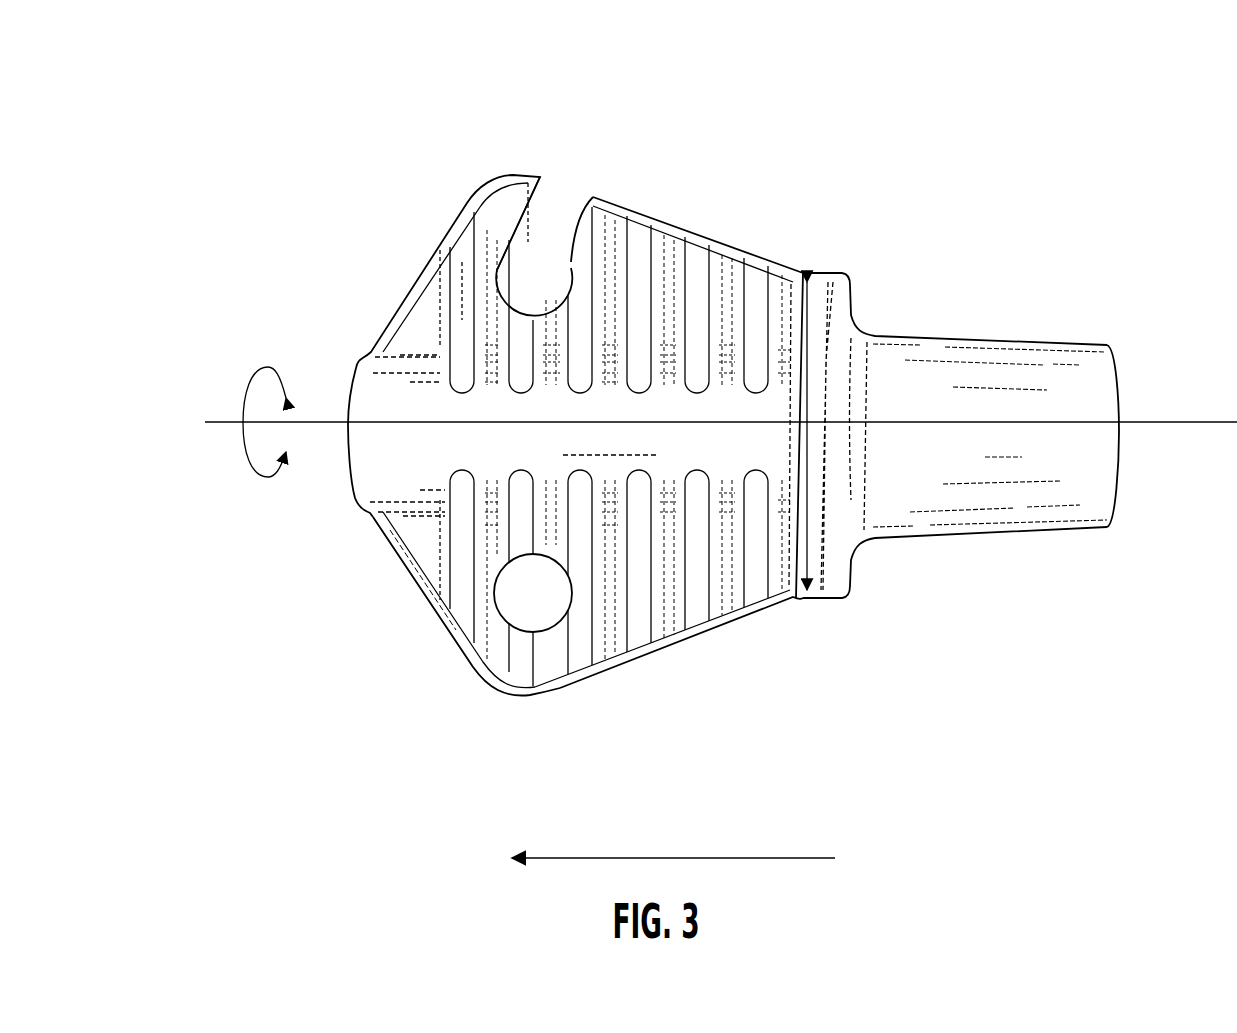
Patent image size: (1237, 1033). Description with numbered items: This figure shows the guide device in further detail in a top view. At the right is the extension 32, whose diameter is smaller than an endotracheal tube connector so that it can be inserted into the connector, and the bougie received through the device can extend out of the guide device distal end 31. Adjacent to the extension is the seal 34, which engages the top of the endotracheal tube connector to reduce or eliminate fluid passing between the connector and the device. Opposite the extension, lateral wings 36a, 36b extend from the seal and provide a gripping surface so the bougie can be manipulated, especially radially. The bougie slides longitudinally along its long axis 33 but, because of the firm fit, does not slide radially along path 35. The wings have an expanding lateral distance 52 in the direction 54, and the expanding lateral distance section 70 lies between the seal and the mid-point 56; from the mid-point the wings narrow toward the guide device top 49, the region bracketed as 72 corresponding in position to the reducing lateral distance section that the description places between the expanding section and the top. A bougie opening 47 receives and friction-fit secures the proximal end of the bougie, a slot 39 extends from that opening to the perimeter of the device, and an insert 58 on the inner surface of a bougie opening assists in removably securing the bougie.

The guide device distal end 31 is at (1158, 422).
The extension 32 is at (1003, 493).
The long axis 33 is at (209, 422).
The seal 34 is at (820, 272).
The path 35 is at (245, 455).
The lateral wing 36a is at (673, 224).
The lateral wing 36b is at (643, 632).
The slot 39 is at (564, 213).
The bougie opening 47 is at (498, 263).
The guide device top 49 is at (326, 368).
The expanding lateral distance 52 is at (793, 362).
The direction 54 is at (738, 858).
The mid-point 56 is at (526, 125).
The insert 58 is at (566, 620).
The expanding lateral distance section 70 is at (783, 770).
The fin region 72 is at (375, 770).